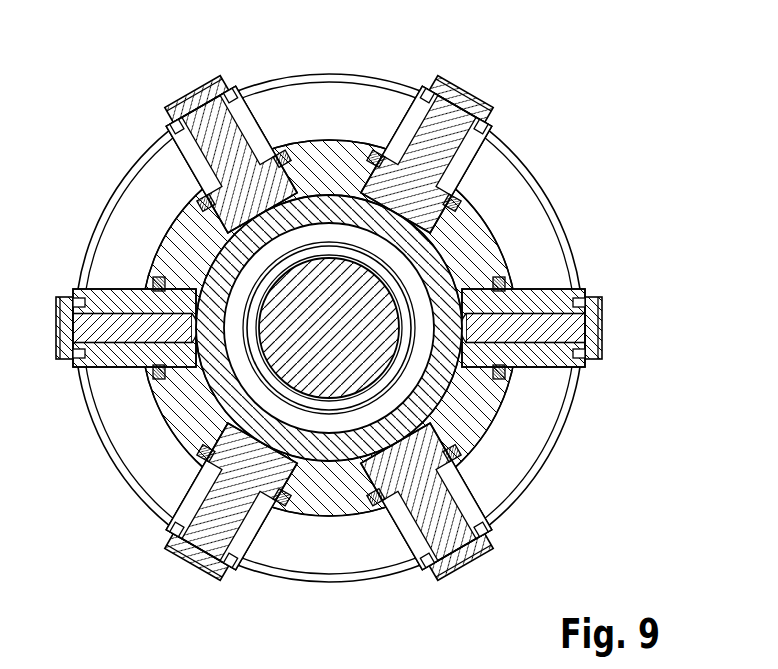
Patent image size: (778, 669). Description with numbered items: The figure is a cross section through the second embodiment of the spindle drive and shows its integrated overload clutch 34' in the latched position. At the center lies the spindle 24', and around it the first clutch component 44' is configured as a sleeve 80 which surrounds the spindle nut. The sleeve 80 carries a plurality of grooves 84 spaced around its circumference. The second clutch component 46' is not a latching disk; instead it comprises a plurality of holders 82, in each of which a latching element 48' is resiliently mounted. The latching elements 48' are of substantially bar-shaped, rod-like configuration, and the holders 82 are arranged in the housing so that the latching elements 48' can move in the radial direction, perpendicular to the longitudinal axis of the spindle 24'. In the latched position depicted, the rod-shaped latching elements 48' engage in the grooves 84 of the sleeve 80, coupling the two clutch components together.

The spindle 24' is at (329, 328).
The overload clutch 34' is at (329, 328).
The first clutch component 44' is at (421, 331).
The sleeve 80 is at (437, 385).
The second clutch component 46' is at (236, 307).
The holder 82 is at (392, 140).
The latching element 48' is at (385, 357).
The groove 84 is at (403, 240).